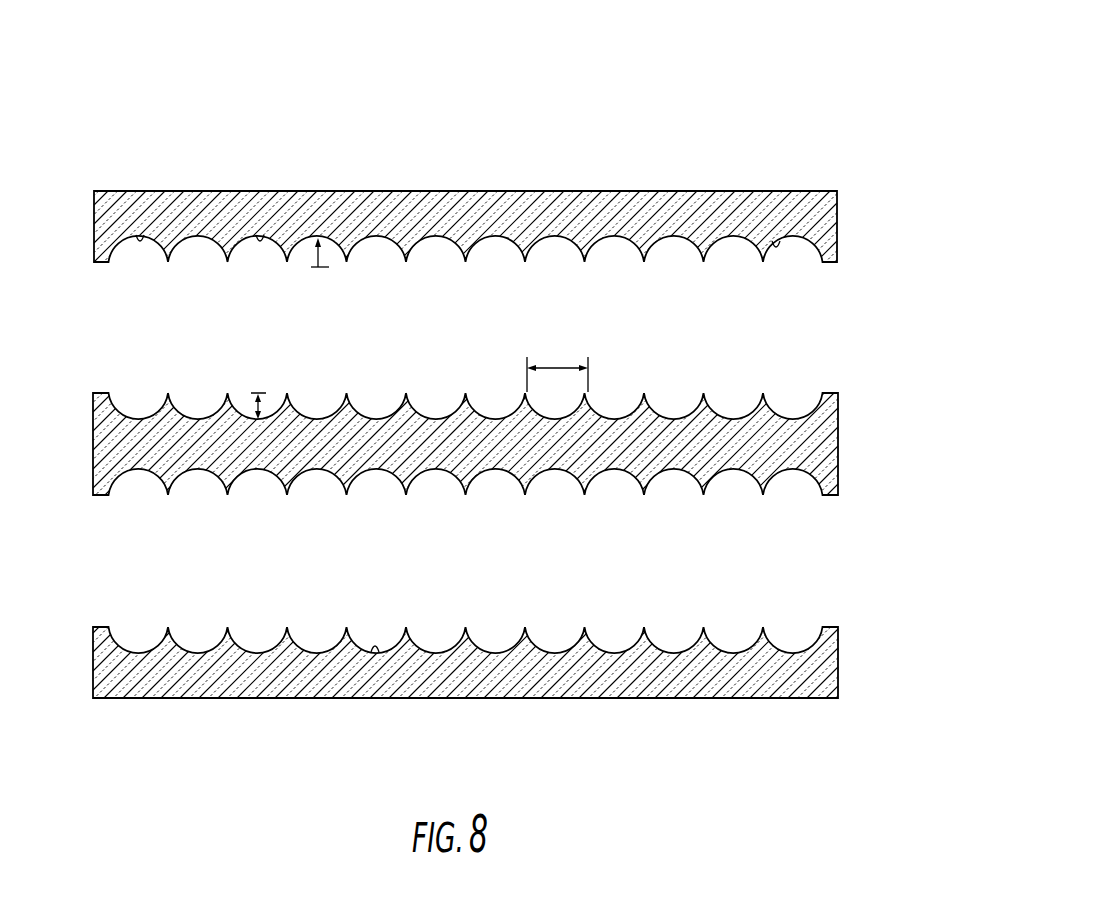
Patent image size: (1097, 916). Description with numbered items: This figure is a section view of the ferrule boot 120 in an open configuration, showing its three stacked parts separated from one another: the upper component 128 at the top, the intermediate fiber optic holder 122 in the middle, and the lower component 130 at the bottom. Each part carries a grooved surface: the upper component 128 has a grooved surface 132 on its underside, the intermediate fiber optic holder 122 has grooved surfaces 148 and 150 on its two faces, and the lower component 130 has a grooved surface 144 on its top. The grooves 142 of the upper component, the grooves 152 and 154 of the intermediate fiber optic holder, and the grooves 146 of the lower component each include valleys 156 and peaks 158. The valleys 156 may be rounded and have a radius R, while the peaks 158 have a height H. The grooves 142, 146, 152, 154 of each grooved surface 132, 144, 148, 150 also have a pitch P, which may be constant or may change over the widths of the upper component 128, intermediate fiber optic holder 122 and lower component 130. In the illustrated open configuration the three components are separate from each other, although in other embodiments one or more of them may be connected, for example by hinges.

The heat exchanger plate assembly 120 is at (721, 57).
The intermediate fiber optic holder 122 is at (816, 440).
The upper component 128 is at (467, 191).
The lower component 130 is at (643, 683).
The grooved surface 132 is at (778, 241).
The groove 142 is at (262, 234).
The grooved surface 144 is at (768, 647).
The groove 146 is at (377, 653).
The grooved surface 148 is at (703, 393).
The grooved surface 150 is at (649, 640).
The groove 152 is at (334, 471).
The groove 154 is at (425, 472).
The valley 156 is at (147, 234).
The peak 158 is at (168, 263).
The radius R is at (323, 267).
The height H is at (255, 394).
The pitch P is at (561, 367).